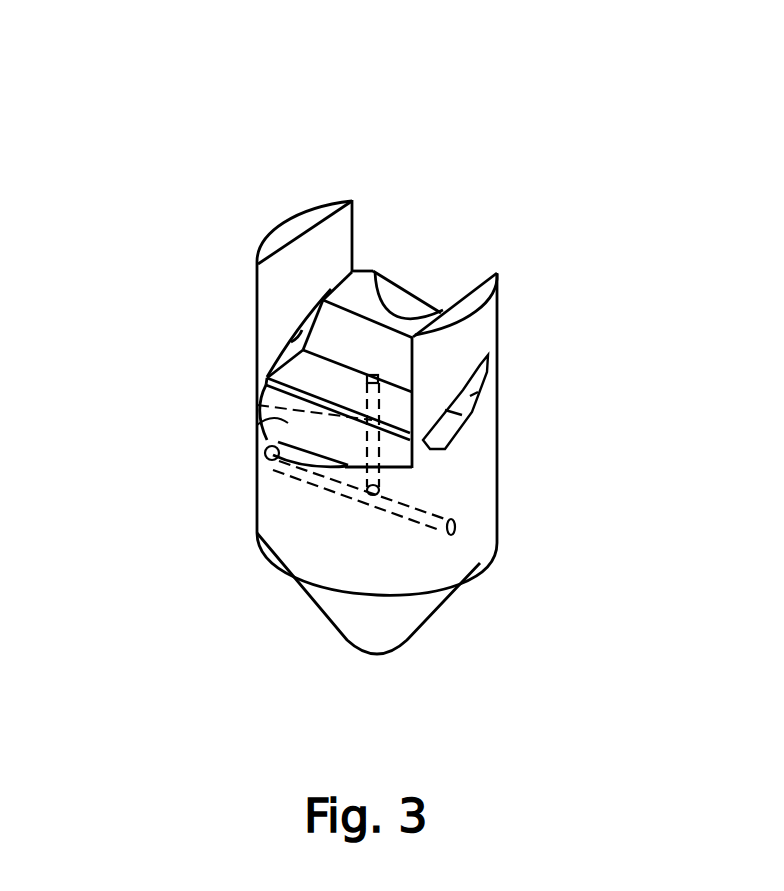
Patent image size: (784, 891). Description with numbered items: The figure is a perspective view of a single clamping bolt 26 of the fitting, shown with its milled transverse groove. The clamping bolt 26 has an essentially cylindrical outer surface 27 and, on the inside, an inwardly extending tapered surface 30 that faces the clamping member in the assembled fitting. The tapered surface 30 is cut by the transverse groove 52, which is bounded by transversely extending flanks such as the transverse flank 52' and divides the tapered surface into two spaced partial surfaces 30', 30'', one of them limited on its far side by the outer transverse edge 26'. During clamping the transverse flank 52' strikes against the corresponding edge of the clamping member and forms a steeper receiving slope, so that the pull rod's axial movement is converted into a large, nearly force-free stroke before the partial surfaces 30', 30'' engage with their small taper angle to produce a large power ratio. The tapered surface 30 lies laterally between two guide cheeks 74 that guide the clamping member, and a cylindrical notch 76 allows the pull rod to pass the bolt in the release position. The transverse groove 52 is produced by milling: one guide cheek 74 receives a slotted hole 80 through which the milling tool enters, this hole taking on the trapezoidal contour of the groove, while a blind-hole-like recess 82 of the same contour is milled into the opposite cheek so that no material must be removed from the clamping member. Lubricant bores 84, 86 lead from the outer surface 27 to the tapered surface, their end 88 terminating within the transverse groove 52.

The clamping bolt 26 is at (333, 481).
The outer transverse edge 26' is at (443, 252).
The cylindrical outer surface 27 is at (482, 477).
The tapered surface 30 is at (304, 521).
The partial surface 30' is at (382, 165).
The partial surface 30'' is at (185, 466).
The transverse groove 52 is at (226, 395).
The transverse flank 52' is at (303, 222).
The guide cheek 74 is at (337, 243).
The cylindrical notch 76 is at (373, 373).
The slotted hole 80 is at (477, 396).
The blind-hole-like recess 82 is at (285, 350).
The lubricant bore 84 is at (470, 520).
The lubricant bore 86 is at (257, 405).
The end of lubricant bores 88 is at (427, 295).